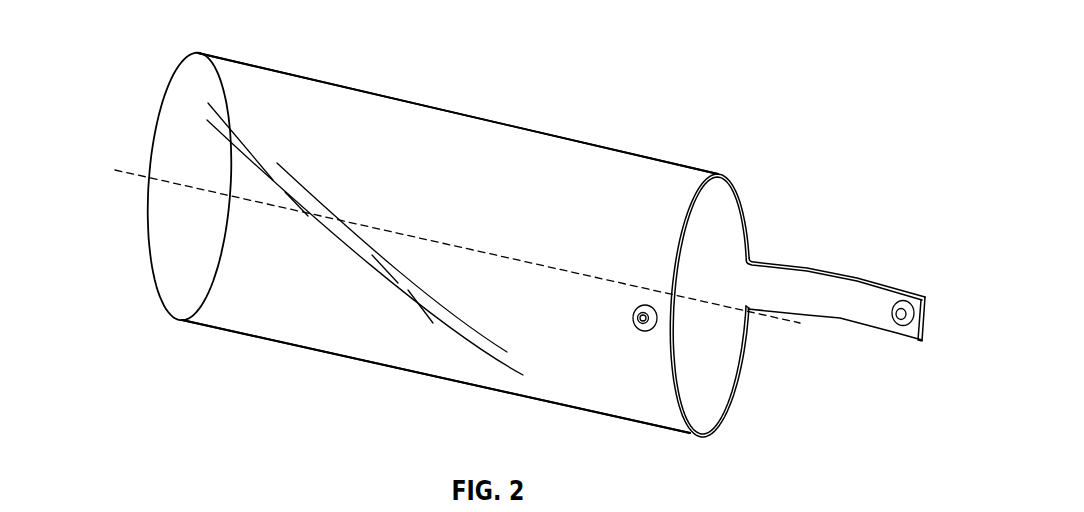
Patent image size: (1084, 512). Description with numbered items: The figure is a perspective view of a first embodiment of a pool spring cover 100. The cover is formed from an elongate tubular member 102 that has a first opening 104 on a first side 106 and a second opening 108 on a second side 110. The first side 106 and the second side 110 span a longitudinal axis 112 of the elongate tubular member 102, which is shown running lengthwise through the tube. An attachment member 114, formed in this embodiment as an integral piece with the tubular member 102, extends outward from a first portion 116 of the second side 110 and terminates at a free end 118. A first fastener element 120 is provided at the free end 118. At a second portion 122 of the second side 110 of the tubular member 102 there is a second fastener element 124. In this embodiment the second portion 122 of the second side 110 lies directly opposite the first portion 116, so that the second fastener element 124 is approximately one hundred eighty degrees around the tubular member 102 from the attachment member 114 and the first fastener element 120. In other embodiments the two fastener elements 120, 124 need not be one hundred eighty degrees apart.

The pool spring cover 100 is at (703, 43).
The elongate tubular member 102 is at (532, 137).
The first opening 104 is at (183, 92).
The first side 106 is at (312, 81).
The second opening 108 is at (712, 405).
The second side 110 is at (650, 415).
The longitudinal axis 112 is at (438, 242).
The attachment member 114 is at (842, 302).
The first portion 116 is at (752, 245).
The free end 118 is at (887, 282).
The first fastener element 120 is at (903, 328).
The second portion 122 is at (660, 340).
The second fastener element 124 is at (641, 336).